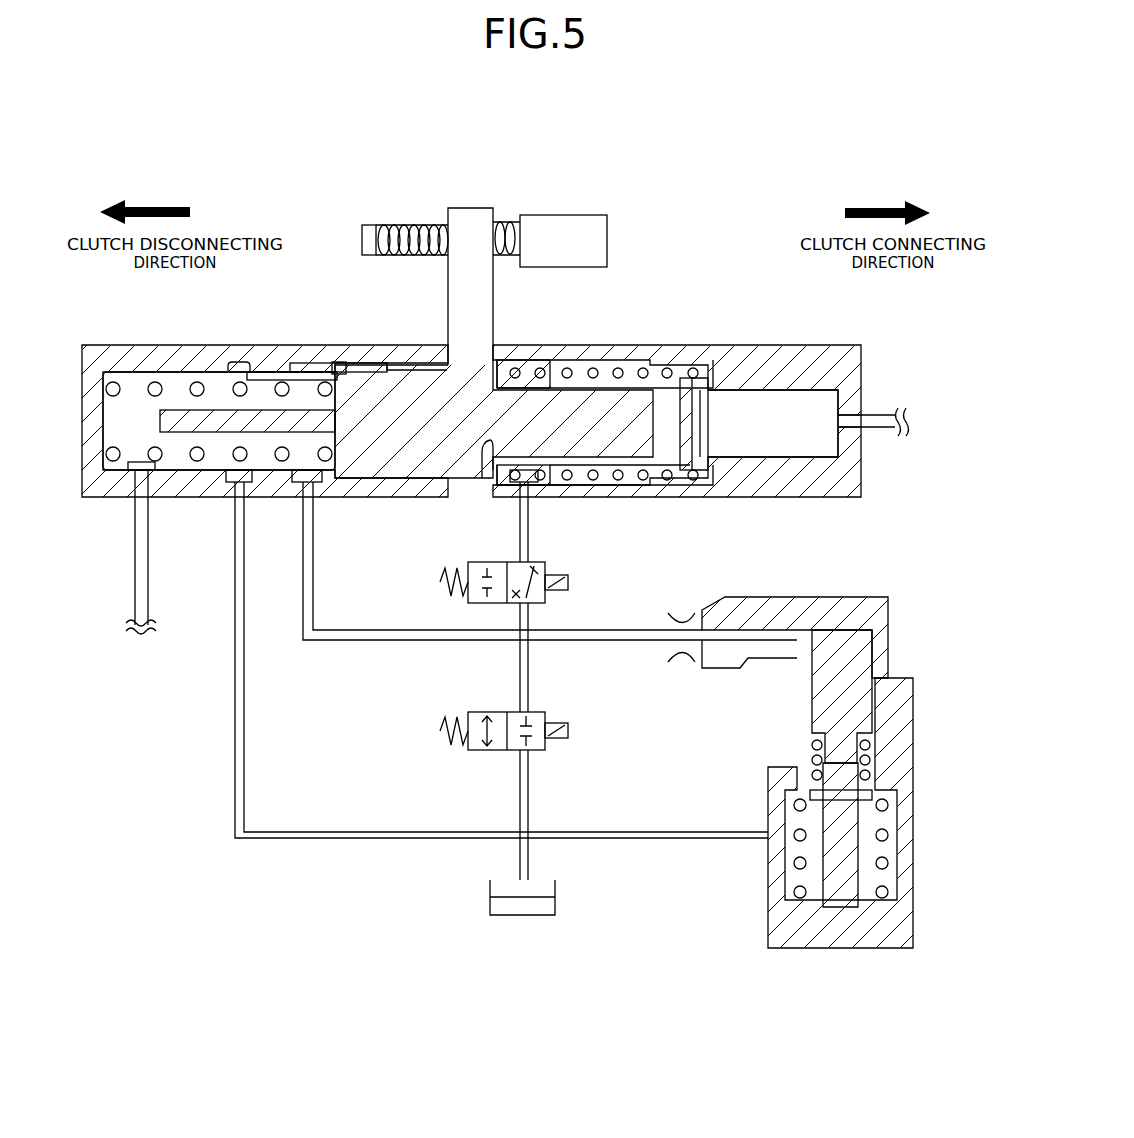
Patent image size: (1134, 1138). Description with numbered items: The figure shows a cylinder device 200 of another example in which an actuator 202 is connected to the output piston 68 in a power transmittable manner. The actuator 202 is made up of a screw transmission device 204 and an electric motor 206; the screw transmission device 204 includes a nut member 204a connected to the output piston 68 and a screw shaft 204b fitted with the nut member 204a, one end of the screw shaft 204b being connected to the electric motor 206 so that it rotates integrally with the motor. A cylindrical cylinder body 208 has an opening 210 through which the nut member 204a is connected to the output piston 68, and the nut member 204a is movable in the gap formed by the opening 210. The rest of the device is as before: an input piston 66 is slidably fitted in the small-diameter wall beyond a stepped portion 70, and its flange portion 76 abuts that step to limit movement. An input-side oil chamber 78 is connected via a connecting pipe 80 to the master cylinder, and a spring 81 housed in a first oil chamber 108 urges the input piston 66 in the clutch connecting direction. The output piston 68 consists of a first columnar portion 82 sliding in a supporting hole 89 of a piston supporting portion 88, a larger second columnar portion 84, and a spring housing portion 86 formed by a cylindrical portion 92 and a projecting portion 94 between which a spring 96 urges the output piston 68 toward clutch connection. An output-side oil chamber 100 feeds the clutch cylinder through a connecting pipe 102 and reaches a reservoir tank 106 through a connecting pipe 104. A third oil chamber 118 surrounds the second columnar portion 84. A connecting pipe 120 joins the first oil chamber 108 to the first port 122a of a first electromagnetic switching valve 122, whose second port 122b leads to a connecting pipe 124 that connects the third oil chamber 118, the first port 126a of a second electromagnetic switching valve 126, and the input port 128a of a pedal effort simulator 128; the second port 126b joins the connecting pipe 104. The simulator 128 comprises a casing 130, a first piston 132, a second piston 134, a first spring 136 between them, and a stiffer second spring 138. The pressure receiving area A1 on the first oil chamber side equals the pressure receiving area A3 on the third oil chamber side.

The cylinder device 200 is at (765, 172).
The actuator 202 is at (466, 160).
The screw transmission device 204 is at (405, 192).
The nut member 204a is at (478, 292).
The screw shaft 204b is at (410, 258).
The electric motor 206 is at (592, 240).
The cylinder body 208 is at (175, 330).
The opening 210 is at (400, 364).
The input piston 66 is at (765, 497).
The output piston 68 is at (418, 470).
The stepped portion 70 is at (712, 367).
The flange portion 76 is at (700, 378).
The input-side oil chamber 78 is at (840, 388).
The connecting pipe 80 is at (876, 430).
The spring 81 is at (590, 362).
The first columnar portion 82 is at (620, 370).
The second columnar portion 84 is at (375, 440).
The spring housing portion 86 is at (275, 390).
The piston supporting portion 88 is at (535, 368).
The supporting hole 89 is at (486, 478).
The cylindrical portion 92 is at (308, 368).
The projecting portion 94 is at (250, 420).
The spring 96 is at (212, 395).
The output-side oil chamber 100 is at (135, 470).
The connecting pipe 102 is at (150, 545).
The connecting pipe 104 is at (340, 840).
The reservoir tank 106 is at (525, 918).
The first oil chamber 108 is at (684, 378).
The third oil chamber 118 is at (340, 362).
The connecting pipe 120 is at (530, 528).
The first electromagnetic switching valve 122 is at (480, 600).
The first port 122a is at (528, 568).
The second port 122b is at (530, 603).
The connecting pipe 124 is at (385, 642).
The second electromagnetic switching valve 126 is at (480, 758).
The first port 126a is at (528, 712).
The second port 126b is at (532, 750).
The pedal effort simulator 128 is at (748, 950).
The input port 128a is at (676, 624).
The casing 130 is at (900, 690).
The first piston 132 is at (822, 610).
The second piston 134 is at (862, 855).
The first spring 136 is at (810, 755).
The second spring 138 is at (795, 862).
The pressure receiving area A1 is at (668, 430).
The pressure receiving area A3 is at (352, 478).